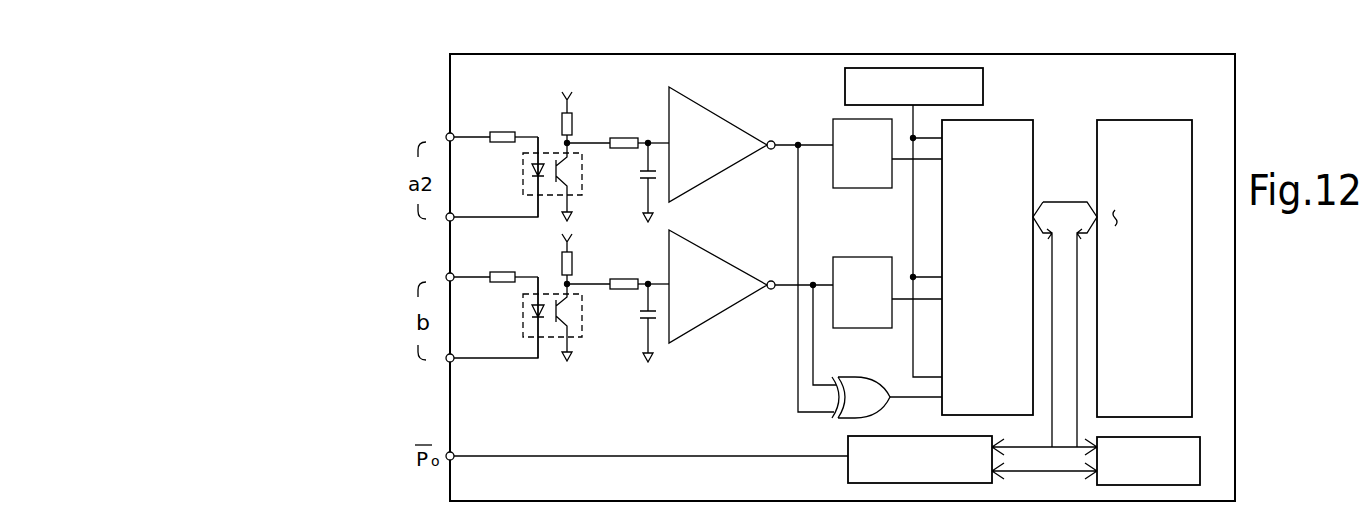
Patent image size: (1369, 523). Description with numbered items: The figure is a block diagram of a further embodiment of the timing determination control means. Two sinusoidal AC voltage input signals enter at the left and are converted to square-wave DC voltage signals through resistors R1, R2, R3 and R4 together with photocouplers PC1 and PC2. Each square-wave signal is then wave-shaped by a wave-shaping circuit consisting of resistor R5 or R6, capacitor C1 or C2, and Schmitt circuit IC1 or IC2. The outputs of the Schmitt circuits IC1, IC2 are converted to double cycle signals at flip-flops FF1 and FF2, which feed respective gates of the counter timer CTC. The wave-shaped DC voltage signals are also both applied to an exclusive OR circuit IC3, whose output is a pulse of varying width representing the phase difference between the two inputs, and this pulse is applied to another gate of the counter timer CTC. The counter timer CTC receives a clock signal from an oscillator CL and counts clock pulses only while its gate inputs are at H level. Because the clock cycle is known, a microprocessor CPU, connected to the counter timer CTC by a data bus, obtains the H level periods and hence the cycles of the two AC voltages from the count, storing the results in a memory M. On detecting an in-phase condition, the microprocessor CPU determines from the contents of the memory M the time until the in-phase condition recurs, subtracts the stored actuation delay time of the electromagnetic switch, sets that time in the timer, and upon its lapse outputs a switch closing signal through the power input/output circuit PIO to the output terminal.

The resistor R1 is at (496, 125).
The resistor R2 is at (496, 265).
The resistor R3 is at (576, 105).
The resistor R4 is at (569, 257).
The resistor R5 is at (618, 131).
The resistor R6 is at (618, 272).
The capacitor C1 is at (638, 182).
The capacitor C2 is at (638, 323).
The photocoupler PC1 is at (523, 177).
The photocoupler PC2 is at (523, 317).
The Schmitt circuit IC1 is at (725, 114).
The Schmitt circuit IC2 is at (718, 253).
The exclusive OR circuit IC3 is at (861, 397).
The flip-flop FF1 is at (862, 153).
The flip-flop FF2 is at (862, 292).
The oscillator CL is at (985, 88).
The counter timer CTC is at (1012, 120).
The microprocessor CPU is at (1138, 120).
The memory M is at (1183, 437).
The power input/output circuit PIO is at (848, 471).